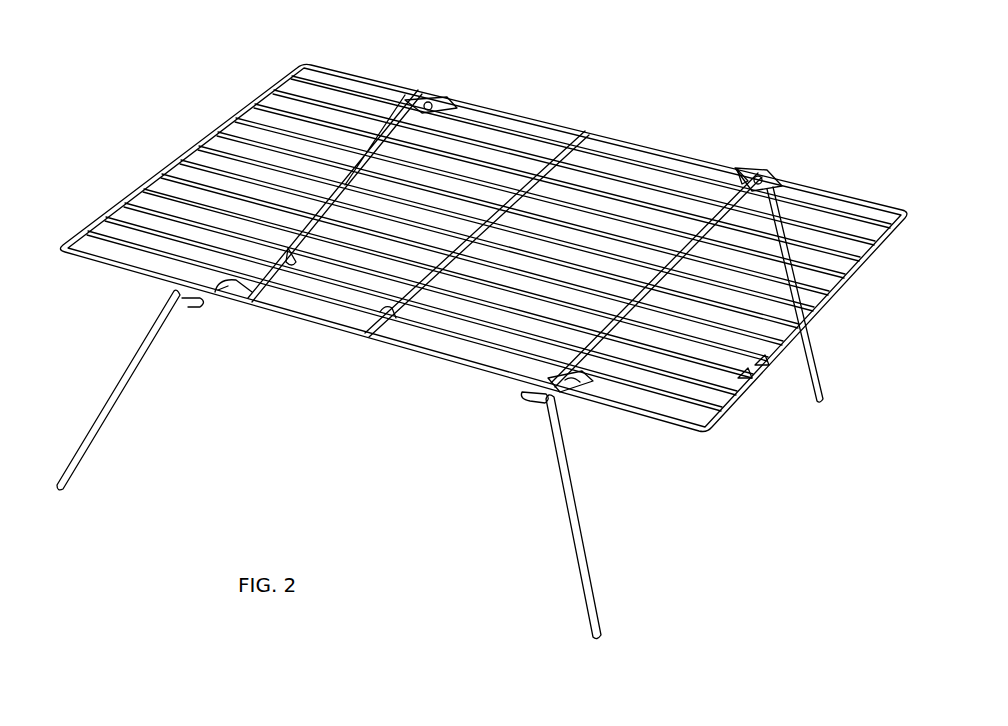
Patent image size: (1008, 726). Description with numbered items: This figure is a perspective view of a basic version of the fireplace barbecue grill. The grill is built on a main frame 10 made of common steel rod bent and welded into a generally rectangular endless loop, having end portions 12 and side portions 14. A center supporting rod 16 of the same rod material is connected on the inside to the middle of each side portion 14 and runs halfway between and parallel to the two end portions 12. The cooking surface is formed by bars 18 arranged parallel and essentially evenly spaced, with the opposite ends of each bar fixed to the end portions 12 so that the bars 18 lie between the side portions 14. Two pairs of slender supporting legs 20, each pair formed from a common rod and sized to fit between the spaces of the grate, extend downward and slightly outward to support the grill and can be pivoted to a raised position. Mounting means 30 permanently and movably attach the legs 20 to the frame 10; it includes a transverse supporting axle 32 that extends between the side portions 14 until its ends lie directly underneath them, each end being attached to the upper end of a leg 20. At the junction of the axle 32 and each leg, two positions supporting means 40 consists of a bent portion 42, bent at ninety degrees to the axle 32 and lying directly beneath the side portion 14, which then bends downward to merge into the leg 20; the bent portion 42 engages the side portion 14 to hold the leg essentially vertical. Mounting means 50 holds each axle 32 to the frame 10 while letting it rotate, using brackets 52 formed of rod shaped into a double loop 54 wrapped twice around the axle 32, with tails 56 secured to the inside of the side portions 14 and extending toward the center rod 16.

The main frame 10 is at (340, 75).
The end portions 12 is at (188, 152).
The side portions 14 is at (541, 112).
The center supporting rod 16 is at (372, 320).
The bars 18 is at (762, 372).
The supporting legs 20 is at (113, 408).
The mounting means 30 is at (222, 294).
The transverse supporting axle 32 is at (262, 288).
The two positions supporting means 40 is at (192, 305).
The bent portion 42 is at (526, 402).
The mounting means 50 is at (566, 380).
The brackets 52 is at (420, 98).
The double loop 54 is at (766, 176).
The tails 56 is at (745, 170).